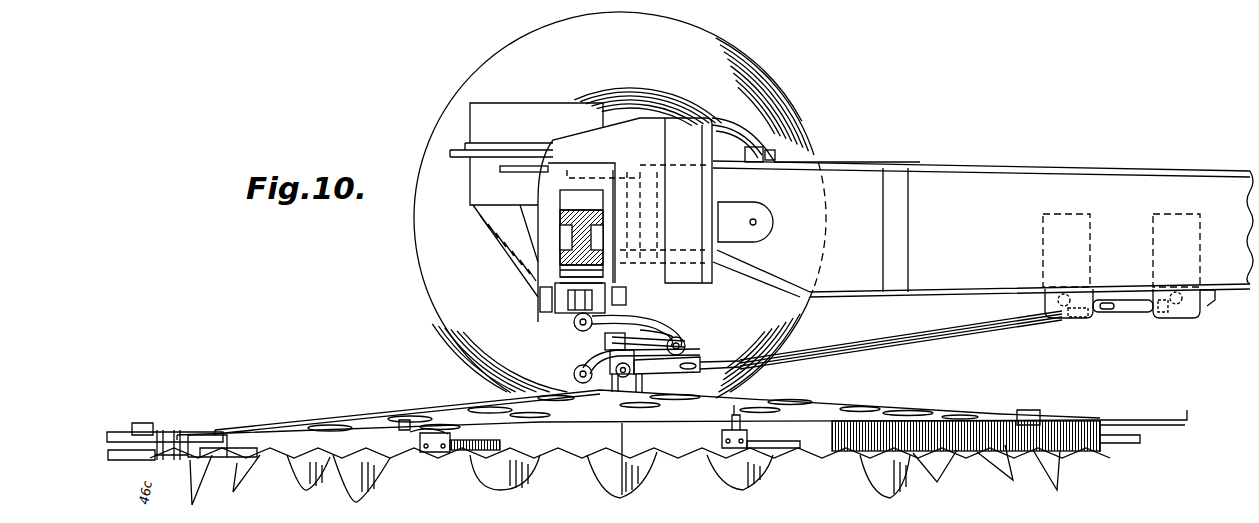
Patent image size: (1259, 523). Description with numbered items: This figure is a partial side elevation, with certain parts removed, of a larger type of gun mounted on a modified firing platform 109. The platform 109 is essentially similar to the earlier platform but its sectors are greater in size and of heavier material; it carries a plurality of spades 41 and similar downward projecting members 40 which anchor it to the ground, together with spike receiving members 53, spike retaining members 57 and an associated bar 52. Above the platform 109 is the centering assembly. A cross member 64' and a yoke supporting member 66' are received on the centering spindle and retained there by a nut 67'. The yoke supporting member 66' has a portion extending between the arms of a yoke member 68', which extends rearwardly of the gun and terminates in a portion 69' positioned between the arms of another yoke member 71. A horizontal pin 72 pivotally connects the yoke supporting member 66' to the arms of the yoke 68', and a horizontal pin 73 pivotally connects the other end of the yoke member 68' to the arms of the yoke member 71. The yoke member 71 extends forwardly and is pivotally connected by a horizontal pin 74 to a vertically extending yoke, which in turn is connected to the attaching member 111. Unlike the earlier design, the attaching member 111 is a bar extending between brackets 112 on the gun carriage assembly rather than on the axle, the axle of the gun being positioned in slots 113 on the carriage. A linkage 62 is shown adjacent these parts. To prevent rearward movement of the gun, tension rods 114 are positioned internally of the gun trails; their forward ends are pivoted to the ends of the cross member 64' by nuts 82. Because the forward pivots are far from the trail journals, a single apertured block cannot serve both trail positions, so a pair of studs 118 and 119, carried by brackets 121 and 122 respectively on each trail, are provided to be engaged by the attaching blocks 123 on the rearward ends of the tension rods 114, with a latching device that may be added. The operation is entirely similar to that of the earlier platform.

The guard 40 is at (621, 498).
The spade 41 is at (547, 478).
The bar 52 is at (784, 450).
The spike receiving member 53 is at (783, 441).
The spike retaining member 57 is at (408, 452).
The lever bar 62 is at (612, 338).
The cross member 64' is at (645, 409).
The yoke supporting member 66' is at (661, 401).
The nut 67' is at (624, 361).
The yoke member 68' is at (570, 375).
The end portion of yoke member 69' is at (671, 325).
The yoke member 71 is at (648, 320).
The horizontal pin 72 is at (584, 388).
The horizontal pin 73 is at (686, 347).
The horizontal pin 74 is at (574, 323).
The nut 82 is at (614, 388).
The platform 109 is at (847, 406).
The attaching member 111 is at (563, 287).
The bracket 112 is at (555, 268).
The slot 113 is at (568, 238).
The tension rod 114 is at (928, 338).
The stud 118 is at (1045, 303).
The stud 119 is at (1186, 318).
The bracket 121 is at (1043, 242).
The bracket 122 is at (1153, 226).
The attaching block 123 is at (1208, 306).